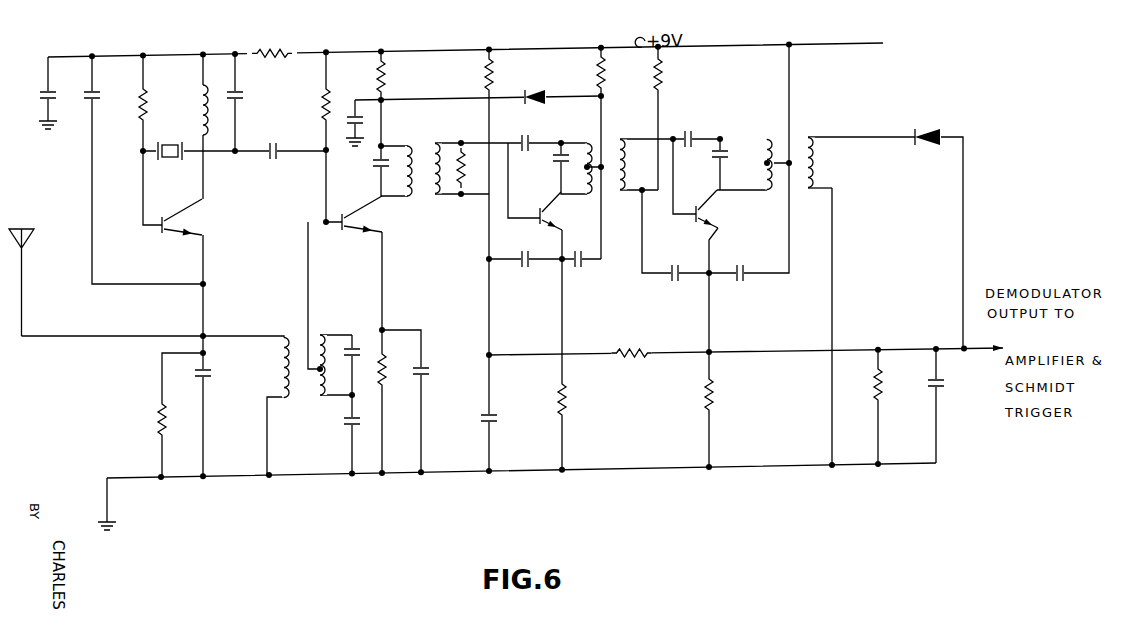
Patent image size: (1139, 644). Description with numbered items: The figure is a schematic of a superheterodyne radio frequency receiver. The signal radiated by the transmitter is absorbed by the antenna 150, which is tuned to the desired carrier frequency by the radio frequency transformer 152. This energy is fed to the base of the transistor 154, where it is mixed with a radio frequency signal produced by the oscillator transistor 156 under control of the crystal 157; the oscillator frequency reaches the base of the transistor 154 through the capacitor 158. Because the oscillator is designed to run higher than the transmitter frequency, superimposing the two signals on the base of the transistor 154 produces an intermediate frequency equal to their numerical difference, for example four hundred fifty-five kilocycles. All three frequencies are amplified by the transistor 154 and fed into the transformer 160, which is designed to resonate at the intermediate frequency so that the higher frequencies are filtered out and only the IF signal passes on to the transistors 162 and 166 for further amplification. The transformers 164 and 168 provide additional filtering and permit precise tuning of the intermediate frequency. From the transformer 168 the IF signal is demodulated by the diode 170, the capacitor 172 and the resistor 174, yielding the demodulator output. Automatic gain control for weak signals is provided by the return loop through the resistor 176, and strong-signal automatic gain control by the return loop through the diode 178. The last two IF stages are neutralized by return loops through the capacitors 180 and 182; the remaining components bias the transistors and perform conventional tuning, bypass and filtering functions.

The antenna 150 is at (33, 237).
The radio frequency transformer 152 is at (305, 378).
The transistor 154 is at (366, 223).
The oscillator transistor 156 is at (188, 228).
The crystal 157 is at (170, 143).
The capacitor 158 is at (270, 158).
The transformer 160 is at (427, 183).
The transistor 162 is at (553, 222).
The transformer 164 is at (611, 178).
The transistor 166 is at (708, 222).
The transformer 168 is at (803, 176).
The diode 170 is at (953, 114).
The capacitor 172 is at (946, 382).
The resistor 174 is at (884, 386).
The resistor 176 is at (616, 360).
The diode 178 is at (553, 82).
The capacitor 180 is at (526, 136).
The capacitor 182 is at (695, 121).